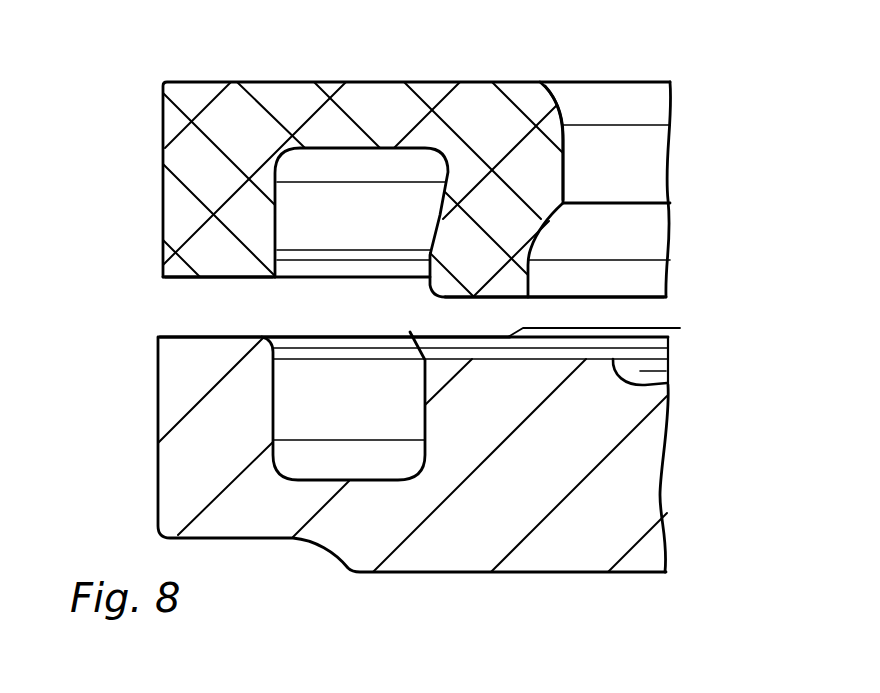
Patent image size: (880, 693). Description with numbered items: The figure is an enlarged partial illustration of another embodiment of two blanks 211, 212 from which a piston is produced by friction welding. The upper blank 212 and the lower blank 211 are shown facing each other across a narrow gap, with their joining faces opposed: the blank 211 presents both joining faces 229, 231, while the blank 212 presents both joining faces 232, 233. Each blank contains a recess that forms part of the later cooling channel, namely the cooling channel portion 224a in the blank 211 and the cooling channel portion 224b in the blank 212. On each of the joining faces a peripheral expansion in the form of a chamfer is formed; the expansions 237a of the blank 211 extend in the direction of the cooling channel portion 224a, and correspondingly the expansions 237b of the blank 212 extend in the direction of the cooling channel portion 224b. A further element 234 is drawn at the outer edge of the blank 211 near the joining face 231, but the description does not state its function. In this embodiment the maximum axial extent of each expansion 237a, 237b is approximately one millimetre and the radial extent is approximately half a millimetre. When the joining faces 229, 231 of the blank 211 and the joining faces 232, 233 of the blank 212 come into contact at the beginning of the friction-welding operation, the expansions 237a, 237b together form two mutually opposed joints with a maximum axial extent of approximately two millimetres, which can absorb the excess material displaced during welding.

The blank 211 is at (157, 366).
The blank 212 is at (215, 82).
The cooling channel portion 224a is at (353, 413).
The cooling channel portion 224b is at (347, 207).
The joining face 229 is at (202, 336).
The joining face 231 is at (680, 328).
The joining face 232 is at (208, 279).
The joining face 233 is at (493, 298).
The edge 234 is at (668, 348).
The peripheral expansion 237a is at (290, 334).
The peripheral expansion 237b is at (433, 293).